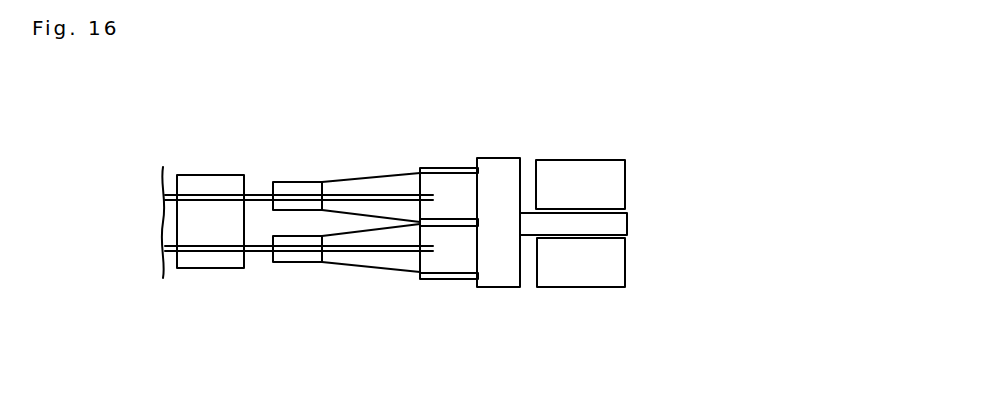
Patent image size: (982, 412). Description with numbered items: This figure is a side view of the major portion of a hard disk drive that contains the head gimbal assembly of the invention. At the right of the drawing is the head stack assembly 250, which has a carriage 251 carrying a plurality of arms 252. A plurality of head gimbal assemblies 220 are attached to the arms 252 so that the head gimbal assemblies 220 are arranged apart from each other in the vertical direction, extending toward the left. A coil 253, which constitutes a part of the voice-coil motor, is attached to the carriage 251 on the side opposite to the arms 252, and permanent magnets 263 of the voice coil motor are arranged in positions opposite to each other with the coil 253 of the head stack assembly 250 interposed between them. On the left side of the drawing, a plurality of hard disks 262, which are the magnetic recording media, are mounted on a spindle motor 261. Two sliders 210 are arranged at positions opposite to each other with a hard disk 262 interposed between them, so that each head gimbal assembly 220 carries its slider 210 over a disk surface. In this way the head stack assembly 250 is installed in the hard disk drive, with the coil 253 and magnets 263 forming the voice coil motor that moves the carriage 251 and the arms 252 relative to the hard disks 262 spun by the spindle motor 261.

The slider 210 is at (272, 194).
The head gimbal assembly 220 is at (367, 175).
The head stack assembly 250 is at (500, 137).
The carriage 251 is at (500, 280).
The arm 252 is at (432, 167).
The coil 253 is at (622, 223).
The spindle motor 261 is at (195, 176).
The hard disk 262 is at (257, 194).
The permanent magnet 263 is at (576, 157).